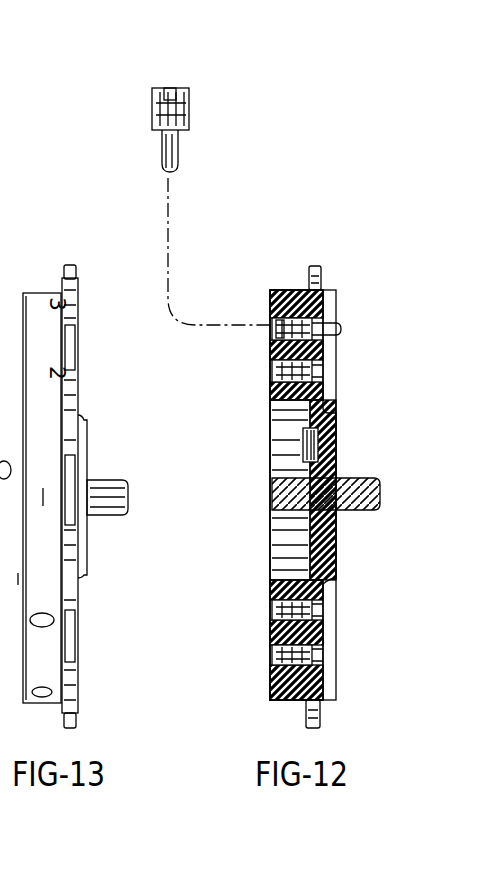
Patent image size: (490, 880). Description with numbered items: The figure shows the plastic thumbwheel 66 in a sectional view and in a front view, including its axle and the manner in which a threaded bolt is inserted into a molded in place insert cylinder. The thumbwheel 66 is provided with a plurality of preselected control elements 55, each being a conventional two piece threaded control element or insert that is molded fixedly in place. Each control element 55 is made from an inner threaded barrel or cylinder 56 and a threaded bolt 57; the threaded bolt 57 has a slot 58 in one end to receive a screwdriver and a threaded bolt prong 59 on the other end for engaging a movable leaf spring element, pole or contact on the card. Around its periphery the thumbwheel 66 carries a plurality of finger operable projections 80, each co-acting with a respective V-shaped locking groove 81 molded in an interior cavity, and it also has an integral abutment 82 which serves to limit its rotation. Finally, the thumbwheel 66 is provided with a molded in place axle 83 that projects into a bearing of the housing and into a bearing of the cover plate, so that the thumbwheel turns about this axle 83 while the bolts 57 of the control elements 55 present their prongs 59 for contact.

In FIG. 12, the control element 55 is at (262, 611).
In FIG. 12, the inner threaded barrel 56 is at (270, 316).
In FIG. 12, the threaded bolt 57 is at (202, 98).
In FIG. 12, the slot 58 is at (170, 94).
In FIG. 12, the threaded bolt prong 59 is at (180, 152).
In FIG. 12, the thumbwheel 66 is at (366, 448).
In FIG. 13, the thumbwheel 66 is at (100, 426).
In FIG. 12, the finger operable projection 80 is at (316, 268).
In FIG. 13, the finger operable projection 80 is at (70, 366).
In FIG. 12, the V-shaped locking groove 81 is at (276, 406).
In FIG. 12, the abutment 82 is at (303, 446).
In FIG. 12, the axle 83 is at (372, 497).
In FIG. 13, the axle 83 is at (111, 500).